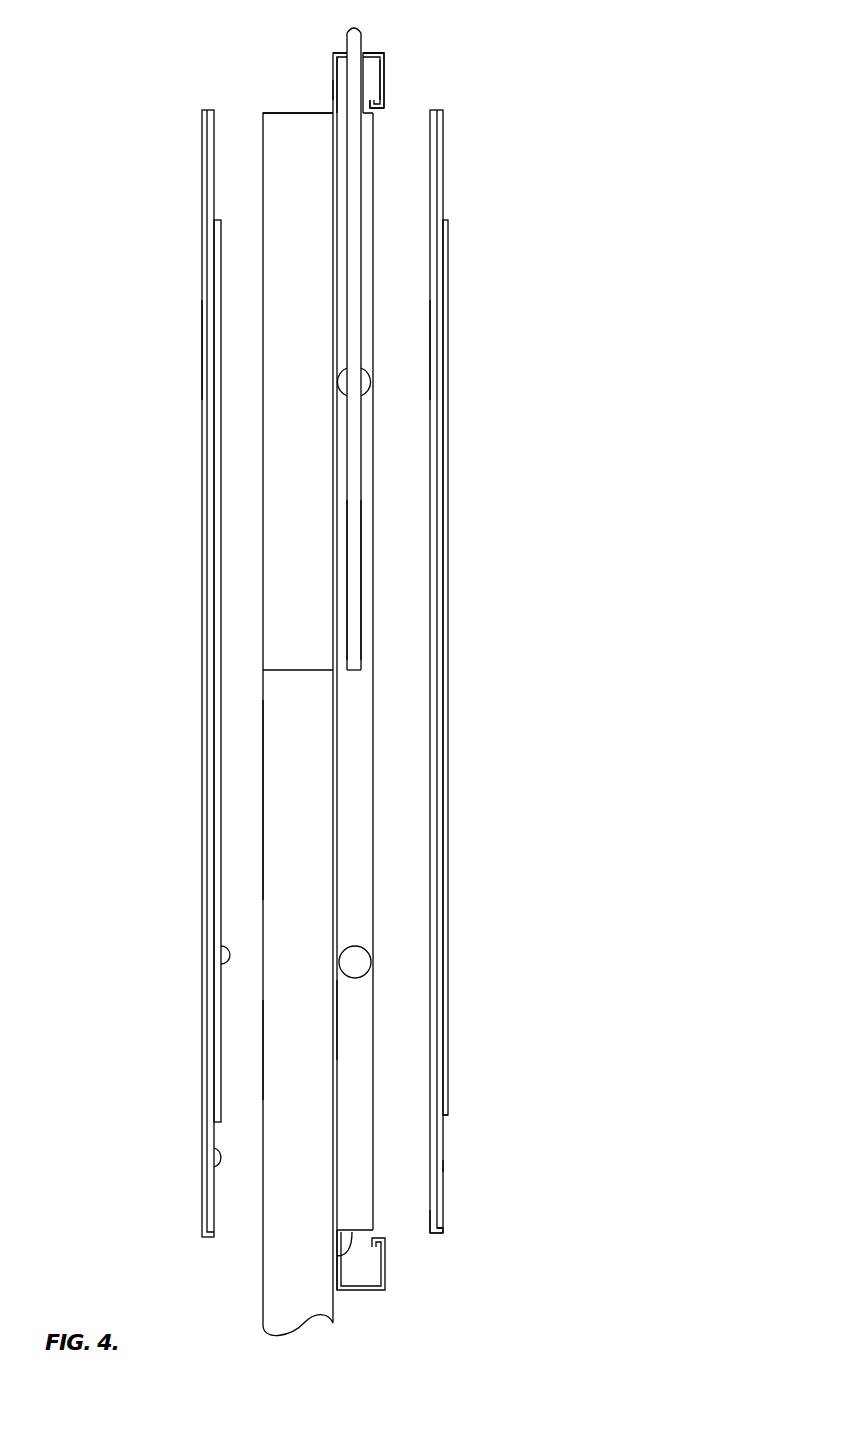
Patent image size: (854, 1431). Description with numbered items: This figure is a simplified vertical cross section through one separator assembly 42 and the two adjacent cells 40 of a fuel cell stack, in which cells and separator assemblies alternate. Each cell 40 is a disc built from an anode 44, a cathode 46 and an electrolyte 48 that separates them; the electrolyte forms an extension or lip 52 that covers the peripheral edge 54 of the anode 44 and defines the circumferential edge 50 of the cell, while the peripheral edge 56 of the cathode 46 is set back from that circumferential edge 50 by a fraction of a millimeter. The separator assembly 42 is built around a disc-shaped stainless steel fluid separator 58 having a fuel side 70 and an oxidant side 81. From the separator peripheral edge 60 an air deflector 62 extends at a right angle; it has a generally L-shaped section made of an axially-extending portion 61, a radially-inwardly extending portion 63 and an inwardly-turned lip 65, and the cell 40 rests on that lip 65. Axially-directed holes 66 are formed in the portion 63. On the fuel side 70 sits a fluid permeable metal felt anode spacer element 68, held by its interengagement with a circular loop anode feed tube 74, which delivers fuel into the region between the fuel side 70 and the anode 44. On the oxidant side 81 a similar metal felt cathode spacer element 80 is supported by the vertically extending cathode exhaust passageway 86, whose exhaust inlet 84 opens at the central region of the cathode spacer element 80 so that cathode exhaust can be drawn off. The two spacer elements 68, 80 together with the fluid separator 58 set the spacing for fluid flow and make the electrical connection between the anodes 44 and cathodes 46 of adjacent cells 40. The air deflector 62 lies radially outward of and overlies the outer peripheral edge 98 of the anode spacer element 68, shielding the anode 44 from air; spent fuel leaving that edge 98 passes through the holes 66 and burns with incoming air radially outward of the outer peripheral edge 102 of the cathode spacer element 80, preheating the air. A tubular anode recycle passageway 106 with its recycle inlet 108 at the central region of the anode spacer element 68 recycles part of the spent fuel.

The cell 40 is at (180, 381).
The separator assembly 42 is at (288, 82).
The anode 44 is at (203, 886).
The cathode 46 is at (221, 948).
The electrolyte 48 is at (214, 1148).
The circumferential edge 50 is at (443, 1228).
The lip 52 is at (438, 1244).
The peripheral edge of anode 54 is at (431, 1225).
The peripheral edge of cathode 56 is at (445, 1118).
The fluid separator 58 is at (330, 88).
The separator peripheral edge 60 is at (333, 57).
The axially-extending portion 61 is at (345, 50).
The air deflector 62 is at (375, 46).
The radially-inwardly extending portion 63 is at (385, 62).
The inwardly-turned lip 65 is at (386, 106).
The axially-directed holes 66 is at (385, 80).
The anode spacer element 68 is at (369, 823).
The fuel side 70 is at (338, 1018).
The anode feed tube 74 is at (359, 947).
The cathode spacer element 80 is at (309, 293).
The oxidant side 81 is at (206, 1050).
The exhaust inlet 84 is at (288, 670).
The cathode exhaust passageway 86 is at (285, 783).
The outer peripheral edge of anode spacer element 98 is at (338, 1254).
The outer peripheral edge of cathode spacer element 102 is at (297, 113).
The anode recycle passageway 106 is at (360, 607).
The recycle inlet 108 is at (357, 668).